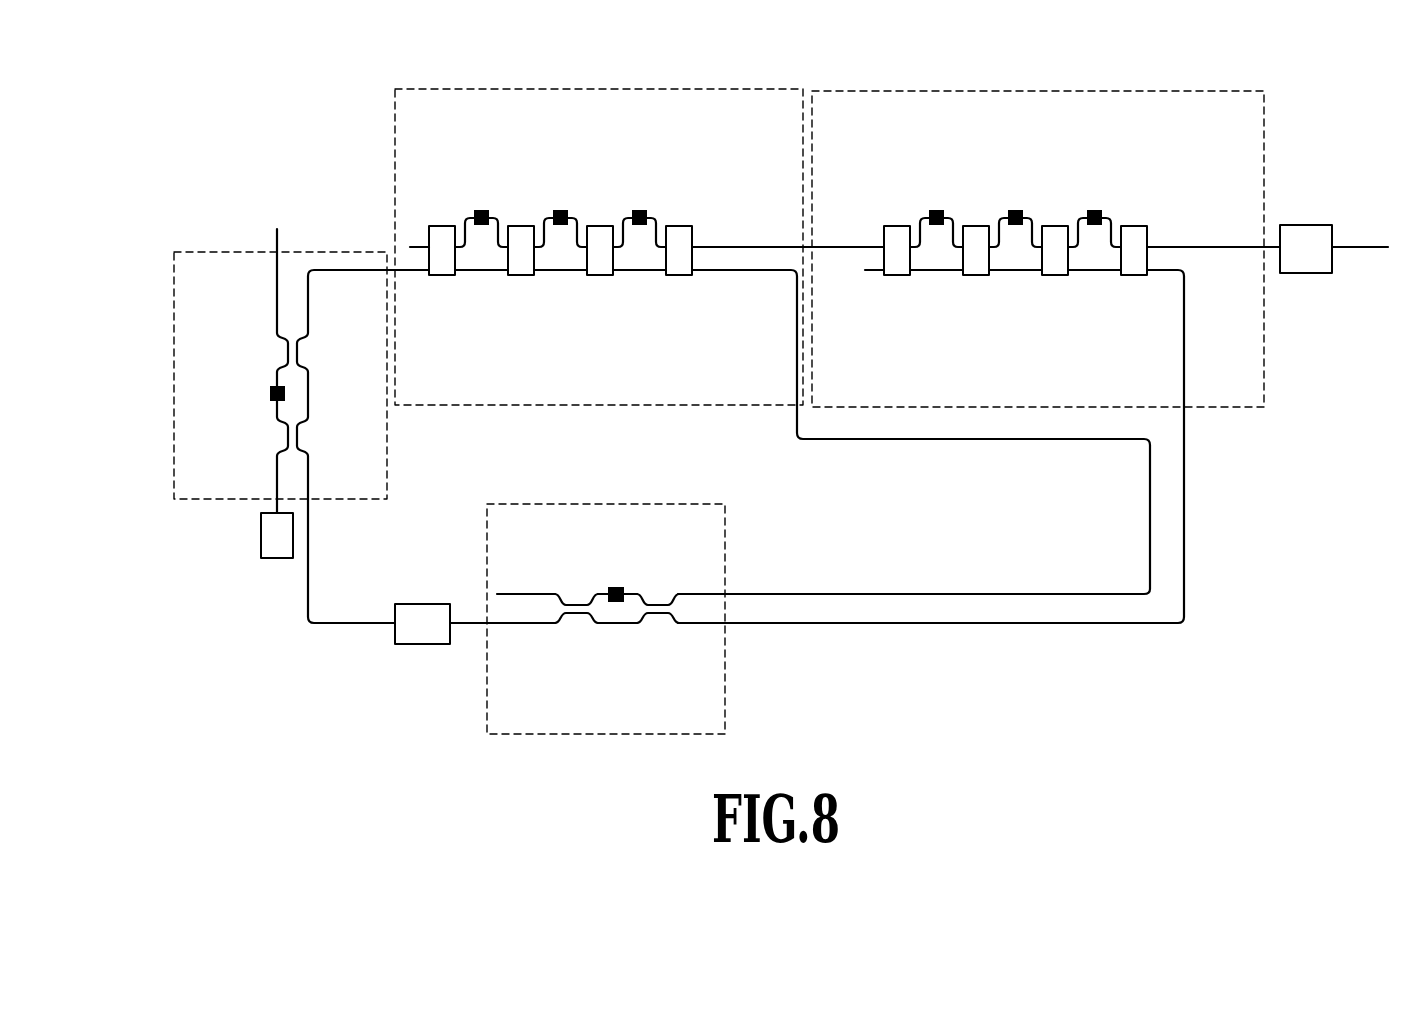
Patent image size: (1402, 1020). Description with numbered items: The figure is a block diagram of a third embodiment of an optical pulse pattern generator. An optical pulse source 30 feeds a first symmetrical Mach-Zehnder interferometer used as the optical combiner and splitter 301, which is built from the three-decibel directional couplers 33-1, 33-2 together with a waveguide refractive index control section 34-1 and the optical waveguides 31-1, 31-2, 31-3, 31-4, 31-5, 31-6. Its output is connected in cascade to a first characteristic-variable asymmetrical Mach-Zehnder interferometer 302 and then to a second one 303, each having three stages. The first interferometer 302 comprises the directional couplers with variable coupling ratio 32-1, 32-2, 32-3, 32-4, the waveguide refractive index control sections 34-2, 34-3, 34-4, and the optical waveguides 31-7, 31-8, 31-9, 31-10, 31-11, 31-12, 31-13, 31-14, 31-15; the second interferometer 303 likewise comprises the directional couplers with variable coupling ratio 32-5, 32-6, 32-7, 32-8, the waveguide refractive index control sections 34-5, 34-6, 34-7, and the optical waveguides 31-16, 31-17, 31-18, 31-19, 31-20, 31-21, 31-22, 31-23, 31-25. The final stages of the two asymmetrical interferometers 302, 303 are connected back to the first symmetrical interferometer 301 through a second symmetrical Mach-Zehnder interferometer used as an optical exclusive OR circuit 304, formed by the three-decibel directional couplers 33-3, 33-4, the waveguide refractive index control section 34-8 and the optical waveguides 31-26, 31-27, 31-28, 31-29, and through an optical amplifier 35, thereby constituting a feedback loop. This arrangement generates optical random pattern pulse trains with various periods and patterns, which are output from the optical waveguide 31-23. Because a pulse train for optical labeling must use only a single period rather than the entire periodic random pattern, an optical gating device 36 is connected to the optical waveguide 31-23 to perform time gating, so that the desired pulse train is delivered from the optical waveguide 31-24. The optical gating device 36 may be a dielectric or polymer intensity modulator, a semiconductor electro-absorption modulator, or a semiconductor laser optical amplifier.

The optical pulse source 30 is at (273, 560).
The optical amplifier 35 is at (420, 604).
The optical gating device 36 is at (1303, 225).
The optical combiner and splitter 301 is at (226, 252).
The first cascade-connected characteristic-variable asymmetrical Mach-Zehnder interf 302 is at (472, 89).
The second cascade-connected characteristic-variable asymmetrical Mach-Zehnder inter 303 is at (935, 91).
The optical exclusive OR circuit 304 is at (725, 665).
The optical waveguide 31-1 is at (277, 480).
The optical waveguide 31-2 is at (309, 471).
The optical waveguide 31-3 is at (276, 404).
The optical waveguide 31-4 is at (309, 389).
The optical waveguide 31-5 is at (277, 296).
The optical waveguide 31-6 is at (309, 277).
The optical waveguide 31-7 is at (423, 246).
The optical waveguide 31-8 is at (468, 214).
The optical waveguide 31-9 is at (478, 271).
The optical waveguide 31-10 is at (547, 214).
The optical waveguide 31-11 is at (558, 271).
The optical waveguide 31-12 is at (627, 214).
The optical waveguide 31-13 is at (638, 271).
The optical waveguide 31-14 is at (750, 247).
The optical waveguide 31-15 is at (752, 271).
The optical waveguide 31-16 is at (870, 271).
The optical waveguide 31-17 is at (925, 214).
The optical waveguide 31-18 is at (933, 271).
The optical waveguide 31-19 is at (1003, 214).
The optical waveguide 31-20 is at (1013, 271).
The optical waveguide 31-21 is at (1082, 214).
The optical waveguide 31-22 is at (1093, 271).
The optical waveguide 31-23 is at (1205, 247).
The optical waveguide 31-24 is at (1368, 247).
The optical waveguide 31-25 is at (1186, 300).
The optical waveguide 31-26 is at (640, 592).
The optical waveguide 31-27 is at (612, 624).
The optical waveguide 31-28 is at (521, 594).
The optical waveguide 31-29 is at (524, 624).
The directional coupler with variable coupling ratio 32-1 is at (442, 276).
The directional coupler with variable coupling ratio 32-2 is at (521, 276).
The directional coupler with variable coupling ratio 32-3 is at (600, 276).
The directional coupler with variable coupling ratio 32-4 is at (679, 276).
The directional coupler with variable coupling ratio 32-5 is at (896, 276).
The directional coupler with variable coupling ratio 32-6 is at (975, 276).
The directional coupler with variable coupling ratio 32-7 is at (1055, 276).
The directional coupler with variable coupling ratio 32-8 is at (1135, 276).
The 3-dB directional coupler 33-1 is at (298, 433).
The 3-dB directional coupler 33-2 is at (298, 352).
The 3-dB directional coupler 33-3 is at (655, 615).
The 3-dB directional coupler 33-4 is at (575, 615).
The waveguide refractive index control section 34-1 is at (270, 392).
The waveguide refractive index control section 34-2 is at (482, 208).
The waveguide refractive index control section 34-3 is at (561, 208).
The waveguide refractive index control section 34-4 is at (640, 208).
The waveguide refractive index control section 34-5 is at (936, 208).
The waveguide refractive index control section 34-6 is at (1015, 208).
The waveguide refractive index control section 34-7 is at (1094, 208).
The waveguide refractive index control section 34-8 is at (617, 587).